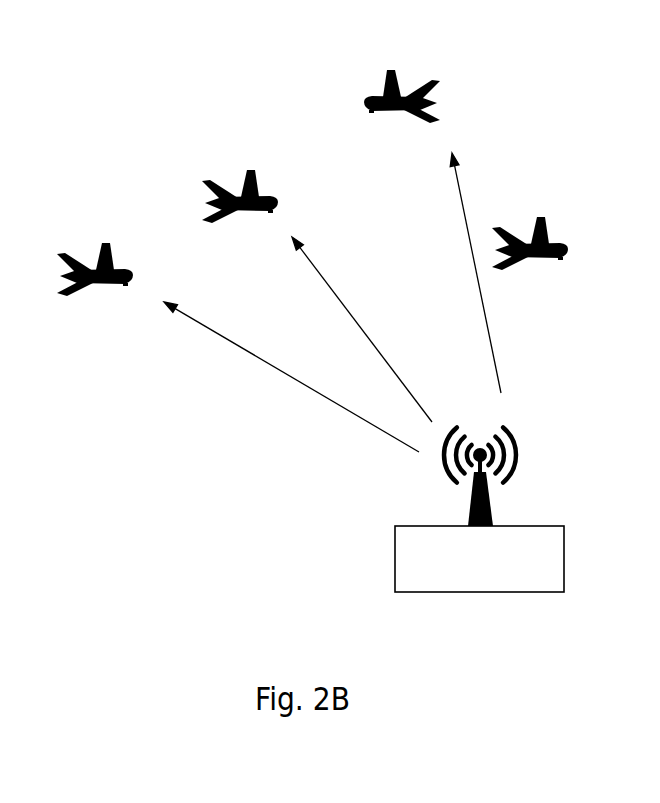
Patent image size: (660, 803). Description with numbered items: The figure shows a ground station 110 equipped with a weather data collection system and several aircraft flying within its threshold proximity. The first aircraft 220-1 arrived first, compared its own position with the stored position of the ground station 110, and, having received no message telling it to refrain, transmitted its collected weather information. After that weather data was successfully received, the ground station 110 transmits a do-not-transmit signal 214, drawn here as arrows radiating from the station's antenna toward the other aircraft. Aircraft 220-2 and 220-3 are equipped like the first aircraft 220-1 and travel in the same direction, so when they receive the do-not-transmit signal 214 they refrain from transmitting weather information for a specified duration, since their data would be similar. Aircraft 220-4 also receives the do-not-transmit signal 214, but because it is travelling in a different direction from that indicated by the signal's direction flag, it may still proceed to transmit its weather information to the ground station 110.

The ground station 110 is at (564, 535).
The do-not-transmit signal 214 is at (247, 351).
The first aircraft 220-1 is at (547, 232).
The aircraft 220-2 is at (257, 190).
The aircraft 220-3 is at (112, 265).
The aircraft 220-4 is at (430, 95).